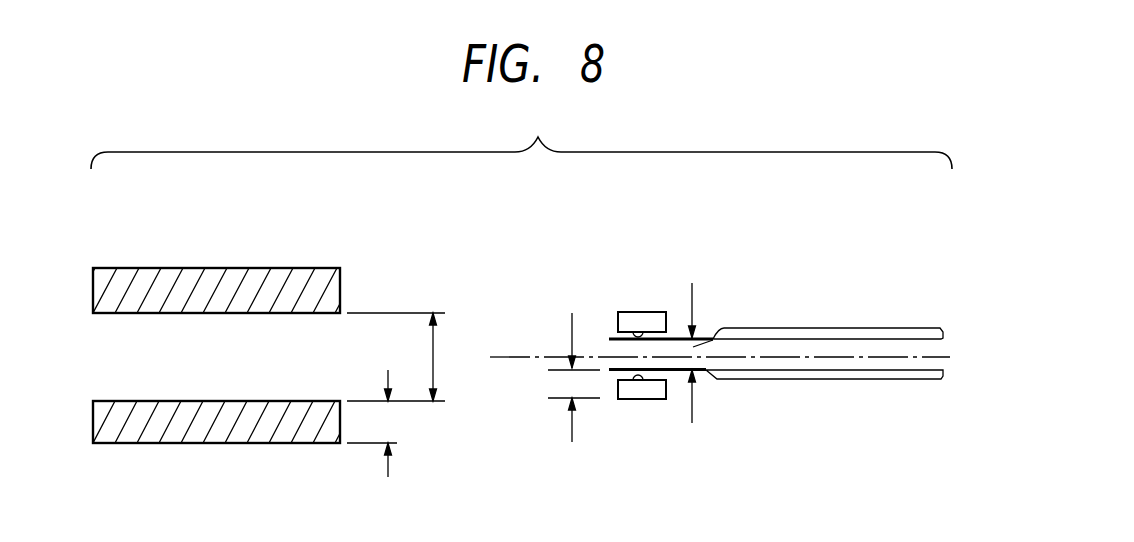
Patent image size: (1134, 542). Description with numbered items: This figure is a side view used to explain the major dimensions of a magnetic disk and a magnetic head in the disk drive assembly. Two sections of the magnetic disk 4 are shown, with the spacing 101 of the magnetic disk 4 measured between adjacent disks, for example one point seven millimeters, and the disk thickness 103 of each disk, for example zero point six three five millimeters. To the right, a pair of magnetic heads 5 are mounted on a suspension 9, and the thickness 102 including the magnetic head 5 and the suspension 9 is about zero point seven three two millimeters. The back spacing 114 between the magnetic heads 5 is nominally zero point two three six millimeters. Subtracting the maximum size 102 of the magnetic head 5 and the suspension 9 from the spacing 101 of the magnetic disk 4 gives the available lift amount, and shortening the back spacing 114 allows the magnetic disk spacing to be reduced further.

The magnetic disk 4 is at (275, 272).
The magnetic head 5 is at (636, 396).
The suspension 9 is at (802, 378).
The spacing of the magnetic disk 101 is at (433, 358).
The thickness including the magnetic head and the suspension 102 is at (562, 378).
The disk thickness 103 is at (388, 417).
The back spacing 114 is at (718, 328).